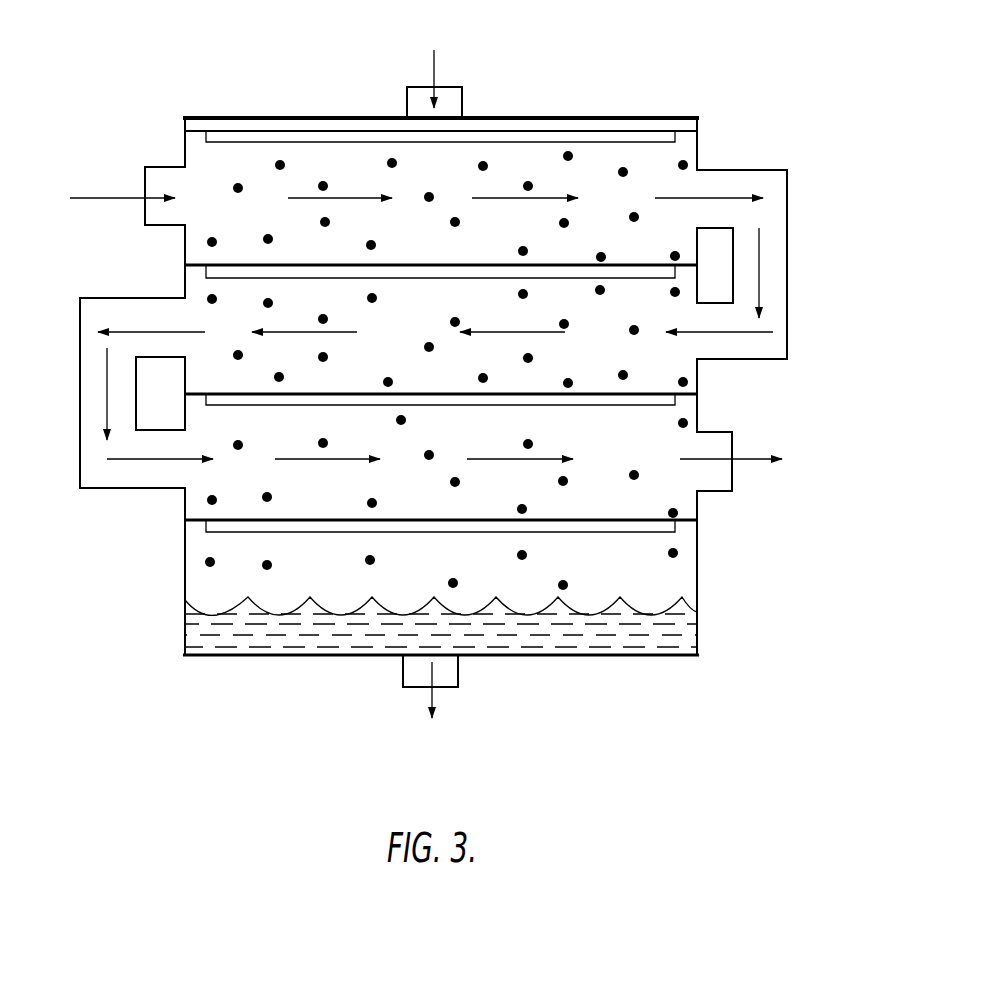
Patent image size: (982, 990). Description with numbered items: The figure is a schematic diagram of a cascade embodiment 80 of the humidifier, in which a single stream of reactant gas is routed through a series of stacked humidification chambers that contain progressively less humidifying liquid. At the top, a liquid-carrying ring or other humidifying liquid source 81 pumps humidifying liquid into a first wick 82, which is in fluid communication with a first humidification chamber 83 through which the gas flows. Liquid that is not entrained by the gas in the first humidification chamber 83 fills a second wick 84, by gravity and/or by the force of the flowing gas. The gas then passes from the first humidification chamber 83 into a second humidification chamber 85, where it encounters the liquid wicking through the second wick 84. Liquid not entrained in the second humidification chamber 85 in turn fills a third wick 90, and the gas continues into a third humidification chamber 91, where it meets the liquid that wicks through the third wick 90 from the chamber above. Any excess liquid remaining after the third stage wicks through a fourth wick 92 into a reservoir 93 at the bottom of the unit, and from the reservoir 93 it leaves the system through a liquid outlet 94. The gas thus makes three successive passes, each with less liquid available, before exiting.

The cascade embodiment 80 is at (818, 291).
The humidifying liquid source 81 is at (455, 113).
The first wick 82 is at (640, 140).
The first humidification chamber 83 is at (630, 205).
The second wick 84 is at (235, 272).
The second humidification chamber 85 is at (637, 350).
The third wick 90 is at (662, 400).
The third humidification chamber 91 is at (230, 475).
The fourth wick 92 is at (235, 528).
The reservoir 93 is at (670, 592).
The liquid outlet 94 is at (422, 673).